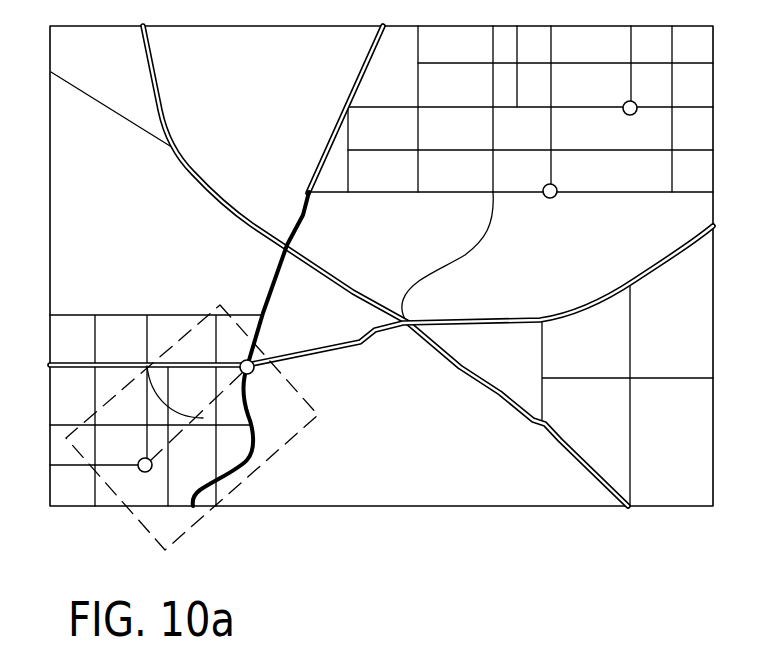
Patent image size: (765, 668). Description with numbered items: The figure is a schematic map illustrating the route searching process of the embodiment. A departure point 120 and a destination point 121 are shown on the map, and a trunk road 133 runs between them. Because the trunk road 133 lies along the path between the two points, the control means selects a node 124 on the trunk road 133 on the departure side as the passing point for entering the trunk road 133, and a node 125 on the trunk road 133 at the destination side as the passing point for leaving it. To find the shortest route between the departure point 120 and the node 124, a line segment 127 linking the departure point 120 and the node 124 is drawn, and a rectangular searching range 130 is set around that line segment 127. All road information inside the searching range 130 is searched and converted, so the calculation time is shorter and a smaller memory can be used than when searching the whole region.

The departure point 120 is at (146, 472).
The destination point 121 is at (624, 113).
The node 124 is at (255, 370).
The node 125 is at (556, 186).
The line segment 127 is at (142, 348).
The searching range 130 is at (318, 410).
The trunk road 133 is at (300, 216).